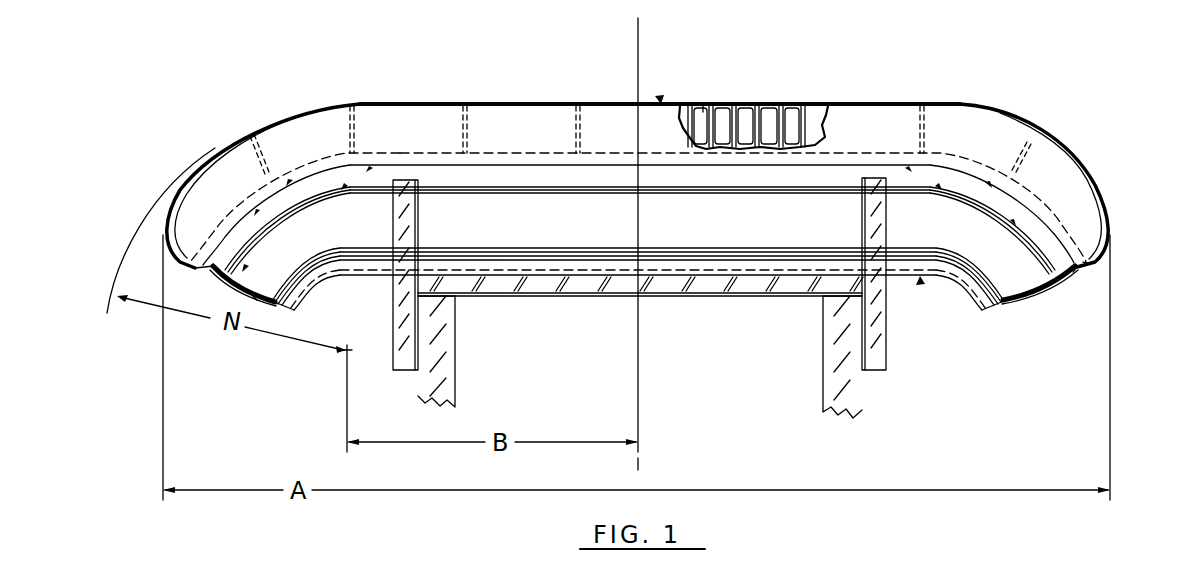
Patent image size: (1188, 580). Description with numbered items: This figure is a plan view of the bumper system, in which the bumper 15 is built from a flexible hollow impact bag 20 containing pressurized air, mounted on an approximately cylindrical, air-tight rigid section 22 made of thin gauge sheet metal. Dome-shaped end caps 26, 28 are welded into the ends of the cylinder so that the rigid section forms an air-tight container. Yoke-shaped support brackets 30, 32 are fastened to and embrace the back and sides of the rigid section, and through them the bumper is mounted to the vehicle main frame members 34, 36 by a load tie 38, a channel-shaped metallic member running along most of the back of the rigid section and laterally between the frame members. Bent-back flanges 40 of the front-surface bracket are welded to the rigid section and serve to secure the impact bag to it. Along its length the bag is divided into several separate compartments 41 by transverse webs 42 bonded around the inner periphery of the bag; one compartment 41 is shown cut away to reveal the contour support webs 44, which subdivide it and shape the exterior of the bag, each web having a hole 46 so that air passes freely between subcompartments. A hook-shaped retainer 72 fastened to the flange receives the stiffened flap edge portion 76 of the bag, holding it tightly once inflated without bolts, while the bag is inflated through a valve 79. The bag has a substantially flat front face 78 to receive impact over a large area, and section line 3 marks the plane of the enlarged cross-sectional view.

The bumper 15 is at (328, 354).
The impact bag 20 is at (443, 98).
The rigid section 22 is at (232, 283).
The end cap 26 is at (257, 300).
The end cap 28 is at (1017, 303).
The support bracket 30 is at (395, 224).
The support bracket 32 is at (880, 224).
The vehicle main frame member 34 is at (448, 328).
The vehicle main frame member 36 is at (838, 343).
The load tie 38 is at (585, 287).
The bent-back flange 40 is at (563, 178).
The compartment 41 is at (703, 106).
The transverse web 42 is at (257, 143).
The contour support web 44 is at (770, 145).
The hole 46 is at (768, 135).
The hook-shaped retainer 72 is at (1077, 270).
The flap edge portion 76 is at (1090, 265).
The flat front face 78 is at (660, 99).
The valve 79 is at (922, 280).
The section line 3- 3 is at (644, 58).